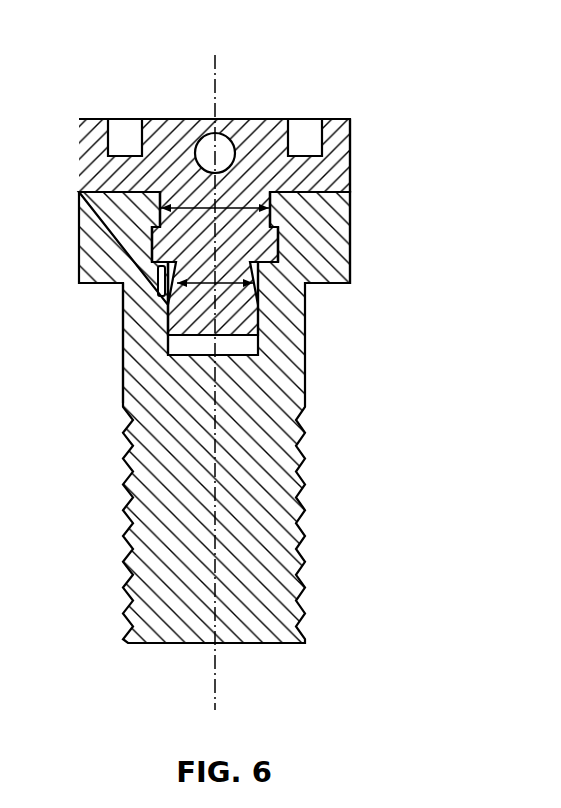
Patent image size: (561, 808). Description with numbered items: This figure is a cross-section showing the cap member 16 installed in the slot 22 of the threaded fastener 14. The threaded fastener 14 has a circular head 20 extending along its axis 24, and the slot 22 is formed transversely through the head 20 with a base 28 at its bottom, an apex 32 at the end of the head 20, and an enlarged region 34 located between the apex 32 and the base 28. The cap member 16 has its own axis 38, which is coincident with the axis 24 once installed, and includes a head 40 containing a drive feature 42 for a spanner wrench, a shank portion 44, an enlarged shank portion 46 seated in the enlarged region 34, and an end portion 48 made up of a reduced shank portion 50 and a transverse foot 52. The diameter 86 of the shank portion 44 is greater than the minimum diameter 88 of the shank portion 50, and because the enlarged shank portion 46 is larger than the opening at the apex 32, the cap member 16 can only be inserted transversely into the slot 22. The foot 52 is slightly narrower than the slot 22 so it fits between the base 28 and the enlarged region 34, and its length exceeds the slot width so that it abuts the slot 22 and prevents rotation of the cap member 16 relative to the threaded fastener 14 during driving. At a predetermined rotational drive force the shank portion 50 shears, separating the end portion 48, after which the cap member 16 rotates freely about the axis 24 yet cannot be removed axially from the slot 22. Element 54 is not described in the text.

The threaded fastener 14 is at (79, 262).
The cap member 16 is at (262, 119).
The head 20 is at (350, 265).
The slot 22 is at (167, 364).
The axis 24 is at (215, 662).
The base 28 is at (227, 357).
The apex 32 is at (160, 205).
The enlarged region 34 is at (158, 226).
The axis 38 is at (215, 702).
The head 40 is at (350, 140).
The drive feature 42 is at (305, 119).
The shank portion 44 is at (268, 215).
The enlarged shank portion 46 is at (278, 250).
The end portion 48 is at (108, 329).
The shank portion 50 is at (150, 283).
The foot 52 is at (234, 338).
The top surface 54 is at (168, 119).
The diameter 86 is at (242, 206).
The minimum diameter 88 is at (248, 290).